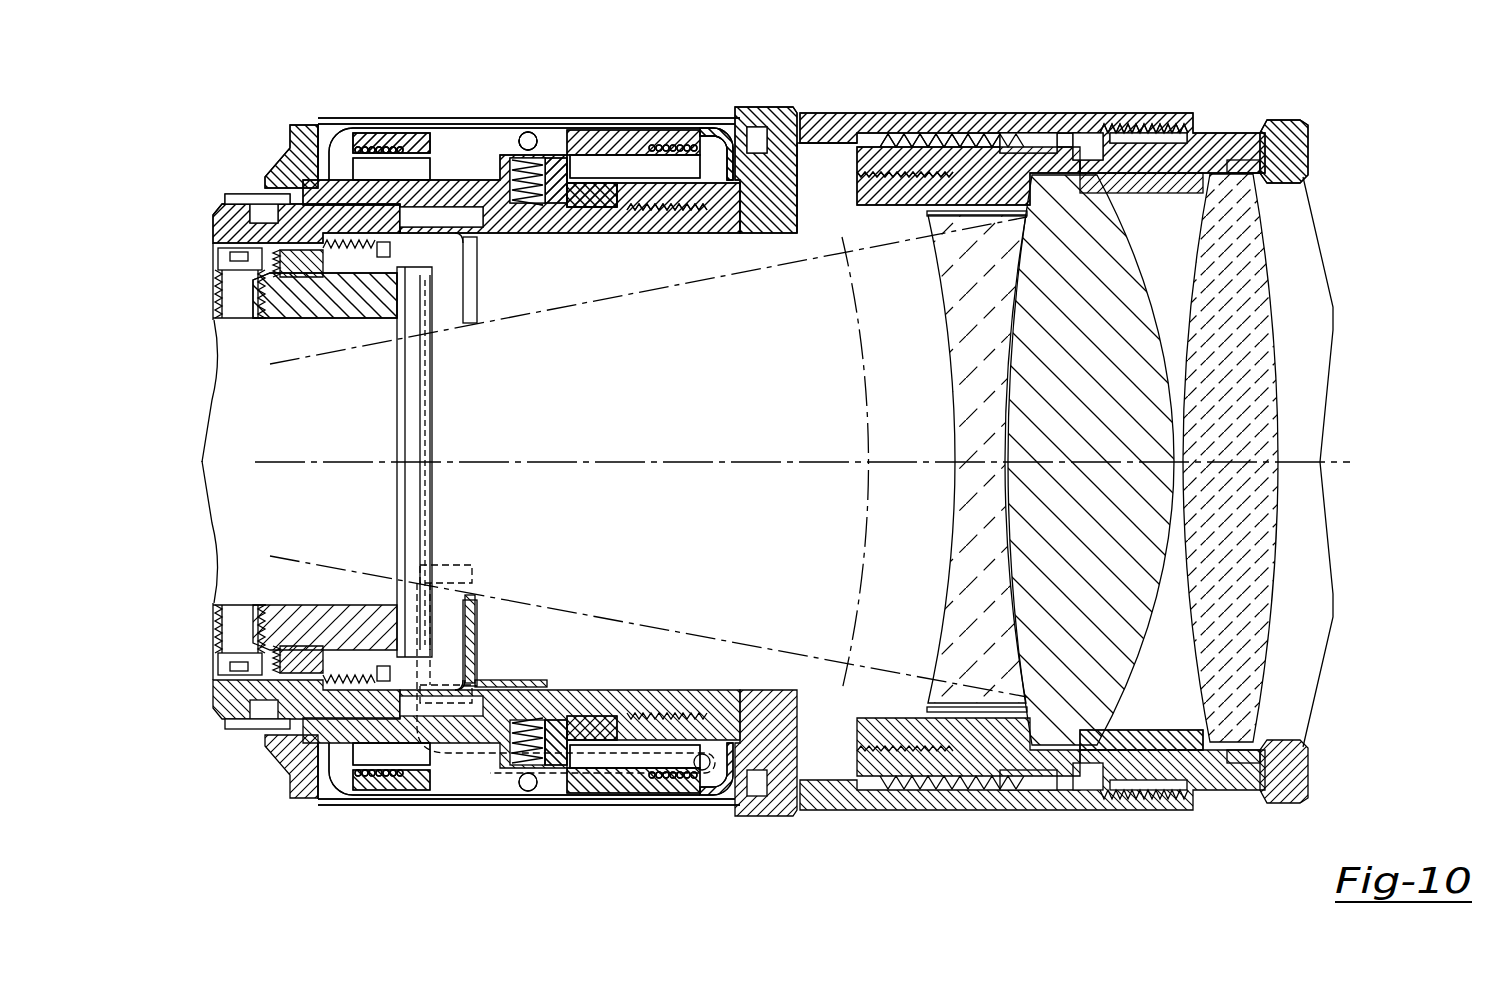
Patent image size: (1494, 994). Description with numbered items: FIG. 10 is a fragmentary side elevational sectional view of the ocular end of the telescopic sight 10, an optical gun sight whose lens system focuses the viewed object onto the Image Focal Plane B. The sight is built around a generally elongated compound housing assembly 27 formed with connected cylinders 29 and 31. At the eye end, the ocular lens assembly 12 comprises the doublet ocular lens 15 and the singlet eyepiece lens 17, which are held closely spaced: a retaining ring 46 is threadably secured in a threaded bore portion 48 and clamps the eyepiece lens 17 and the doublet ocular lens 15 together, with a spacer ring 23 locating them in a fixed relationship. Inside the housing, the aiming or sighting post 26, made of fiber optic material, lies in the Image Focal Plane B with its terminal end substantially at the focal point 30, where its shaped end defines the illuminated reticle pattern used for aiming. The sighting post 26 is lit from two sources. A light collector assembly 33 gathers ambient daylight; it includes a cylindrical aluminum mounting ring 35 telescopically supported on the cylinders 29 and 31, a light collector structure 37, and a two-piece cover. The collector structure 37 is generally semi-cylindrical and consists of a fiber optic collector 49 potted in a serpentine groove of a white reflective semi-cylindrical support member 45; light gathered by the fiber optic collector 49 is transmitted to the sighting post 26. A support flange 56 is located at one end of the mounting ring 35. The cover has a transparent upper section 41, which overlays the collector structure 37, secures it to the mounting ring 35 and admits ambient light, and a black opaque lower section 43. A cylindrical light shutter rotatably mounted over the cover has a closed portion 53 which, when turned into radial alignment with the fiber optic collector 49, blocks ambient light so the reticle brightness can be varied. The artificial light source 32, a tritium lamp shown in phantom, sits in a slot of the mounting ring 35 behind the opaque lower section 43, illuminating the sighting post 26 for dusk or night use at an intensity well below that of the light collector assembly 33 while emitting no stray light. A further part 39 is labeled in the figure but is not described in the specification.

The telescopic sight 10 is at (762, 83).
The ocular lens assembly 12 is at (1330, 140).
The doublet ocular lens 15 is at (1105, 222).
The singlet eyepiece lens 17 is at (1255, 260).
The spacer ring 23 is at (1132, 732).
The sighting post 26 is at (427, 523).
The housing assembly 27 is at (900, 98).
The cylinder 29 is at (820, 116).
The focal point 30 is at (414, 462).
The cylinder 31 is at (665, 232).
The artificial light source 32 is at (452, 628).
The light collector assembly 33 is at (545, 103).
The mounting ring 35 is at (275, 160).
The light collector structure 37 is at (440, 145).
The ball 39 is at (603, 126).
The upper cover section 41 is at (685, 132).
The lower cover section 43 is at (438, 782).
The support member 45 is at (428, 148).
The retaining ring 46 is at (858, 183).
The threaded bore portion 48 is at (885, 176).
The fiber optic collector 49 is at (365, 147).
The closed portion 53 is at (292, 143).
The support flange 56 is at (286, 150).